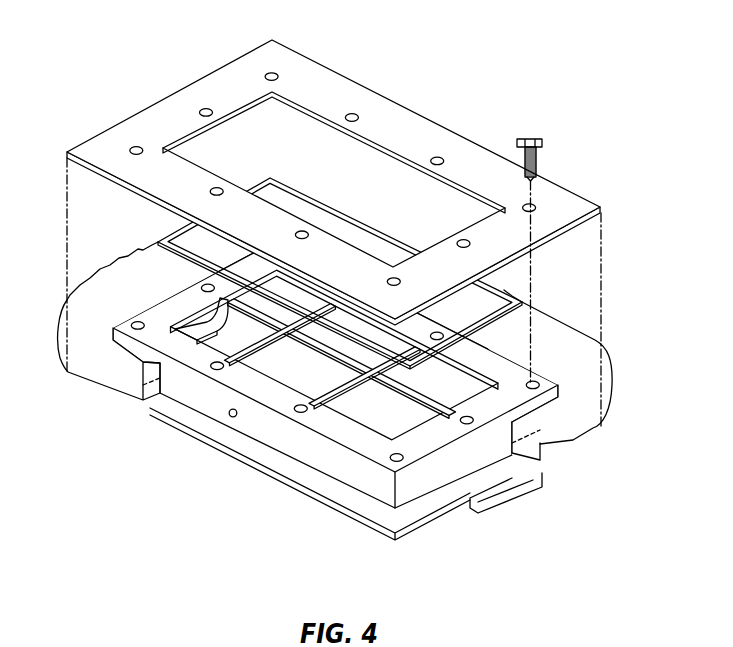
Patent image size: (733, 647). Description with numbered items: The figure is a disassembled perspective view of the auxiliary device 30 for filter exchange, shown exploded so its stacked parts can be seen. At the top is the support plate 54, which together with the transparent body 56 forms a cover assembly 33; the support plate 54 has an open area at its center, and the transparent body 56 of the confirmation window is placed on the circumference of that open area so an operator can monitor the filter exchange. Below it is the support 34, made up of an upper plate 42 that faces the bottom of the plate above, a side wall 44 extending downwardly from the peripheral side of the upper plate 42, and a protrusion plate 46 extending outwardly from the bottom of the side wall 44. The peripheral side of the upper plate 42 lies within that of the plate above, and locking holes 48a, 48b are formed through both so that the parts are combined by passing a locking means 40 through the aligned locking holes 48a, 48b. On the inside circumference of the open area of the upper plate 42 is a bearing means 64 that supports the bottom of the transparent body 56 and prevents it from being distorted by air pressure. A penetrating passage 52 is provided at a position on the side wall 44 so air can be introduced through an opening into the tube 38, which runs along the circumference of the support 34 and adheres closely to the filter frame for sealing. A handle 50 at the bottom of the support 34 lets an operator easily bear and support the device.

The auxiliary device for filter exchange 30 is at (365, 298).
The cover assembly 33 is at (386, 204).
The support 34 is at (313, 408).
The tube 38 is at (313, 382).
The locking means 40 is at (540, 128).
The upper plate 42 is at (335, 389).
The side wall 44 is at (418, 483).
The protrusion plate 46 is at (335, 490).
The locking hole 48a is at (131, 146).
The locking hole 48b is at (298, 412).
The handle 50 is at (552, 460).
The penetrating passage 52 is at (233, 417).
The support plate 54 is at (343, 182).
The transparent body 56 is at (510, 287).
The bearing means 64 is at (230, 357).